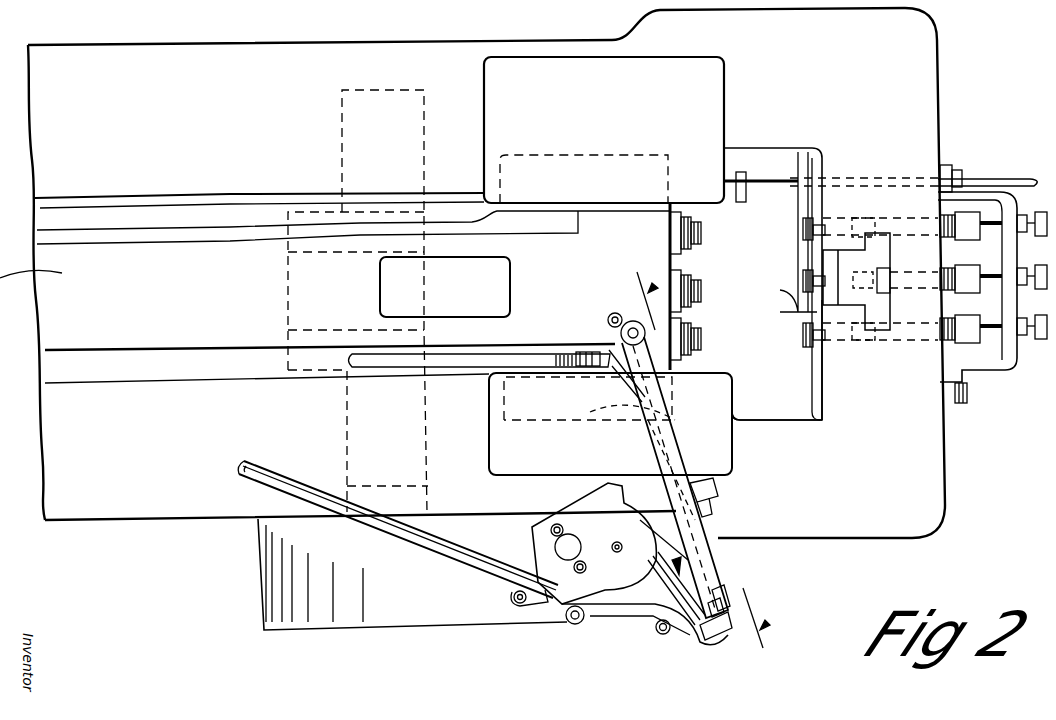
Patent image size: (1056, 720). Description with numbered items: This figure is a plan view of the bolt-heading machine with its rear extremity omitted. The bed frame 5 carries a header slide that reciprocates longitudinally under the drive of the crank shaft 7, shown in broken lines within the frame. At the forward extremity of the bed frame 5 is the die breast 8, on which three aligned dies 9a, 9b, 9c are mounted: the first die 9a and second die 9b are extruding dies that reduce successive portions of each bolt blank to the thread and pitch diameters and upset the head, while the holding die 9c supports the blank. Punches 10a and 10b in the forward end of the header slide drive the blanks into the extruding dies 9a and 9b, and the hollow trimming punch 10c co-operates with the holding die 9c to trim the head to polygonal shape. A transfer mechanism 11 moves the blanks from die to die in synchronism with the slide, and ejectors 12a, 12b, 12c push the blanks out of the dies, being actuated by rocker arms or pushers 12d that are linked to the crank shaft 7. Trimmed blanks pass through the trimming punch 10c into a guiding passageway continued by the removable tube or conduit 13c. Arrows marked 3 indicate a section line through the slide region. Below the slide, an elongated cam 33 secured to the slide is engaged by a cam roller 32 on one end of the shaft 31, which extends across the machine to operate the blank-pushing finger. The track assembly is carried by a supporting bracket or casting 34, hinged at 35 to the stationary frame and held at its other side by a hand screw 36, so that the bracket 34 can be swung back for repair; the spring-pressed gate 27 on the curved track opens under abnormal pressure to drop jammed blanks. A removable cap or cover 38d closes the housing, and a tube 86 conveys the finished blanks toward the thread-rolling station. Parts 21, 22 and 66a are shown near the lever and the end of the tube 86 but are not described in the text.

The bed frame 5 is at (887, 540).
The crank shaft 7 is at (357, 128).
The die breast 8 is at (812, 389).
The first die 9a is at (803, 222).
The second die 9b is at (803, 280).
The holding die 9c is at (803, 330).
The punch 10a is at (701, 233).
The punch 10b is at (701, 291).
The hollow trimming punch 10c is at (701, 339).
The transfer mechanism 11 is at (792, 250).
The ejector 12a is at (842, 216).
The ejector 12b is at (852, 272).
The ejector 12c is at (845, 340).
The rocker arms or pushers 12d is at (990, 272).
The tube or conduit 13c is at (662, 418).
The section line 3 is at (713, 458).
The lever end block 21 is at (735, 597).
The lever foot 22 is at (722, 630).
The spring-pressed gate 27 is at (688, 640).
The shaft 31 is at (650, 396).
The cam roller 32 is at (586, 352).
The elongated cam 33 is at (522, 355).
The supporting bracket 34 is at (618, 600).
The hinge 35 is at (575, 625).
The hand screw 36 is at (685, 567).
The removable cap or cover 38d is at (585, 518).
The rod pivot bracket 66a is at (538, 605).
The tube 86 is at (442, 545).